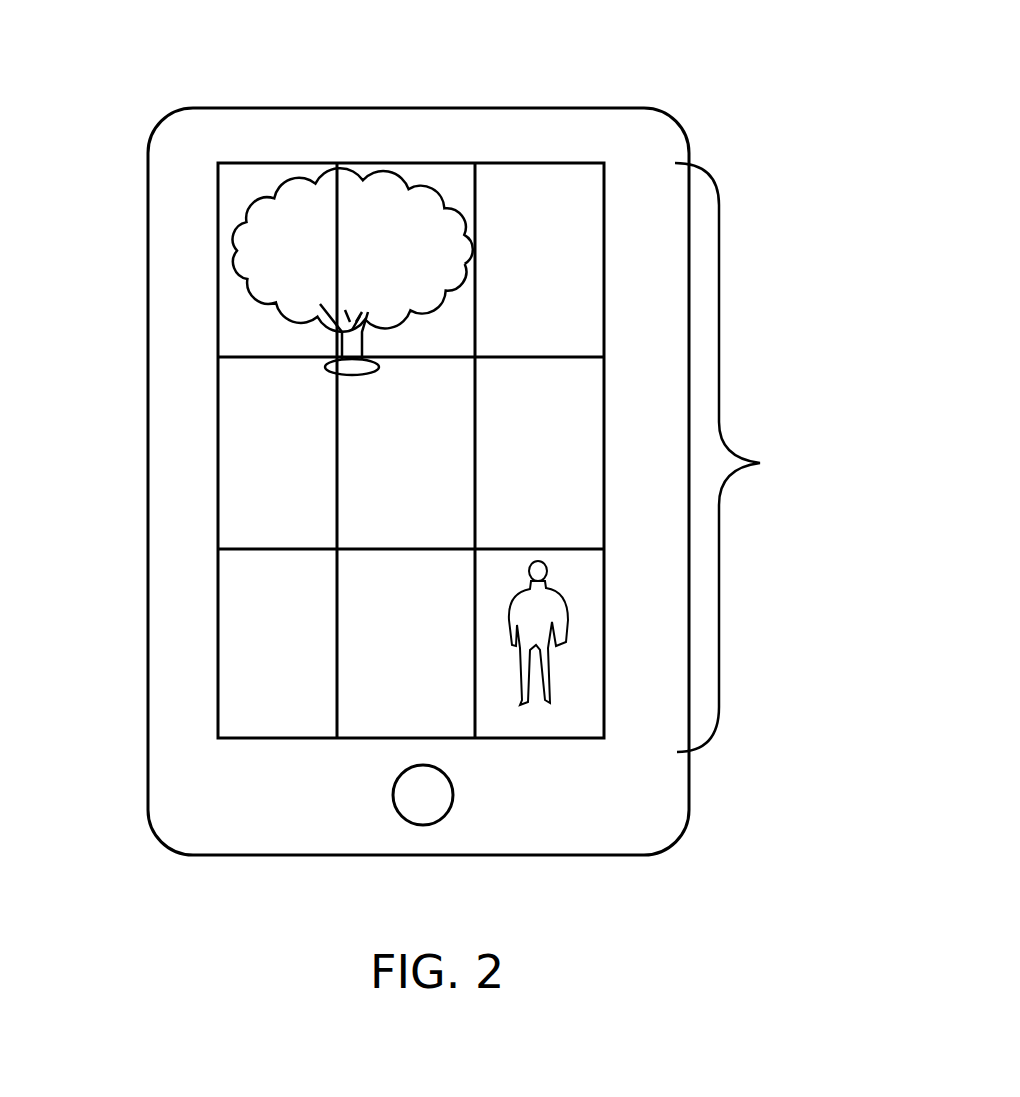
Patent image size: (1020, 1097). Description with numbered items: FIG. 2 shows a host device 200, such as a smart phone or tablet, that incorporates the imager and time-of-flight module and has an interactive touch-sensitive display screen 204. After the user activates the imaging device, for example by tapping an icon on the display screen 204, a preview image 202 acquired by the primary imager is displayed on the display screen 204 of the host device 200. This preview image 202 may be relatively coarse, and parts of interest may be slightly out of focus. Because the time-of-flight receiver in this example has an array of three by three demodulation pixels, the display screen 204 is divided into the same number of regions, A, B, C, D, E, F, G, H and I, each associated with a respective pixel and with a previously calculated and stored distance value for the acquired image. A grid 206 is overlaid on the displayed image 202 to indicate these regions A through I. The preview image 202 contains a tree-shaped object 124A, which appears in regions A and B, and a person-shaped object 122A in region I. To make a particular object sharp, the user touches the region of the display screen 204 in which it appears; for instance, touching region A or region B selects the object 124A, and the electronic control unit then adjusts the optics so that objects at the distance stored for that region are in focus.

The host device 200 is at (675, 120).
The preview image 202 is at (502, 165).
The display screen 204 is at (745, 457).
The grid 206 is at (333, 703).
The object 124A is at (403, 163).
The person object 122A is at (568, 610).
The region A is at (235, 182).
The region B is at (453, 173).
The region C is at (572, 293).
The region D is at (235, 422).
The region E is at (348, 495).
The region F is at (568, 495).
The region G is at (233, 653).
The region H is at (445, 708).
The region I is at (570, 718).